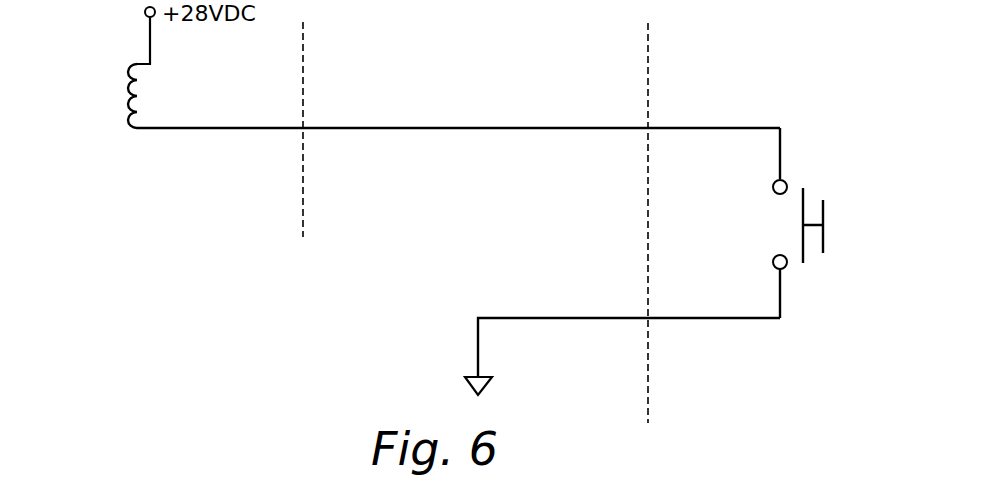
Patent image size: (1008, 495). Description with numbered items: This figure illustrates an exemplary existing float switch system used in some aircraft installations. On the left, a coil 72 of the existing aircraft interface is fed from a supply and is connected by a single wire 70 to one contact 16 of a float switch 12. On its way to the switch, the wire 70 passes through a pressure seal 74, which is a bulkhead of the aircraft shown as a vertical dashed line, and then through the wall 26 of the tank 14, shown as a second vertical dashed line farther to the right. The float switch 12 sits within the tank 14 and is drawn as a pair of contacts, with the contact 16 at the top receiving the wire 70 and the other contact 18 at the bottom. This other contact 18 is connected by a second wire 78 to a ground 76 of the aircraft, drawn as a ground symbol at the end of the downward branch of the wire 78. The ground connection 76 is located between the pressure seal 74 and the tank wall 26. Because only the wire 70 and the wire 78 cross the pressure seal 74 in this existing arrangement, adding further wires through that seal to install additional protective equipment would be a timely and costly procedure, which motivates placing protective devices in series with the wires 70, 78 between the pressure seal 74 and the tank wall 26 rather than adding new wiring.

The coil 72 is at (127, 105).
The wire 70 is at (520, 128).
The pressure seal 74 is at (303, 82).
The tank wall 26 is at (648, 70).
The contact 16 is at (789, 180).
The float switch 12 is at (825, 233).
The contact 18 is at (773, 258).
The tank 14 is at (843, 369).
The wire 78 is at (550, 318).
The ground 76 is at (468, 393).